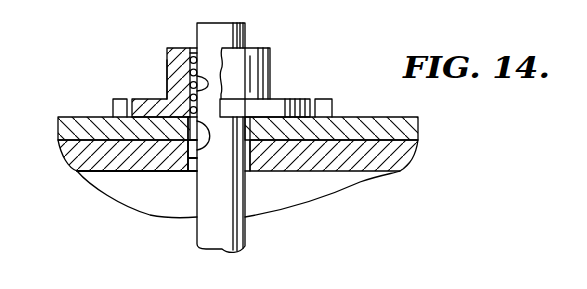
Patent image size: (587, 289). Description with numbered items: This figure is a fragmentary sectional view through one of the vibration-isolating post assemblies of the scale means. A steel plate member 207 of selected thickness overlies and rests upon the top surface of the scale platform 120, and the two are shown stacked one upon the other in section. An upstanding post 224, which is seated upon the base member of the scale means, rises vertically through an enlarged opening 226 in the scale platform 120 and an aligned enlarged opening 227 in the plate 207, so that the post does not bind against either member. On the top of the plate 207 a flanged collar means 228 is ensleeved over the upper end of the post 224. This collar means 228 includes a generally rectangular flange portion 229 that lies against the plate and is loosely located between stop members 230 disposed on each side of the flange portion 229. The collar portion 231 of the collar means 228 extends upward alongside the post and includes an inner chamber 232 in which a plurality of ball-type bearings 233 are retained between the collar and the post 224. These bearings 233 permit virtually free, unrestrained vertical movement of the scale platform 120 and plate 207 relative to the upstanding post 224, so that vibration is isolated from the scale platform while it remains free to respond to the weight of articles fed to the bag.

The scale platform 120 is at (378, 150).
The plate member 207 is at (406, 124).
The upstanding post 224 is at (247, 218).
The enlarged opening 226 is at (197, 162).
The enlarged opening 227 is at (166, 172).
The flanged collar means 228 is at (270, 52).
The rectangular flange portion 229 is at (272, 99).
The stop member 230 is at (113, 110).
The collar portion 231 is at (167, 57).
The inner chamber 232 is at (167, 80).
The ball-type bearing 233 is at (184, 48).